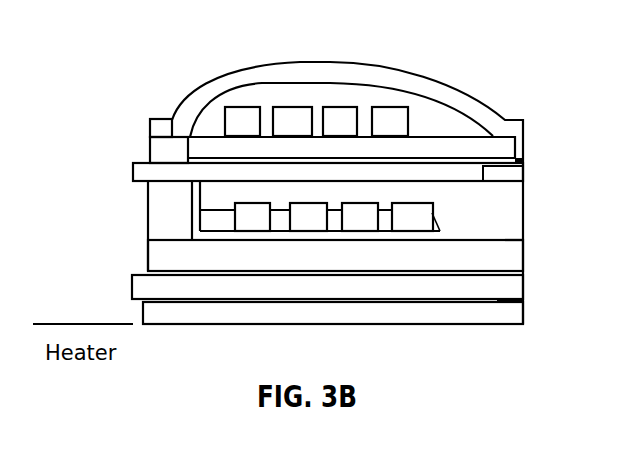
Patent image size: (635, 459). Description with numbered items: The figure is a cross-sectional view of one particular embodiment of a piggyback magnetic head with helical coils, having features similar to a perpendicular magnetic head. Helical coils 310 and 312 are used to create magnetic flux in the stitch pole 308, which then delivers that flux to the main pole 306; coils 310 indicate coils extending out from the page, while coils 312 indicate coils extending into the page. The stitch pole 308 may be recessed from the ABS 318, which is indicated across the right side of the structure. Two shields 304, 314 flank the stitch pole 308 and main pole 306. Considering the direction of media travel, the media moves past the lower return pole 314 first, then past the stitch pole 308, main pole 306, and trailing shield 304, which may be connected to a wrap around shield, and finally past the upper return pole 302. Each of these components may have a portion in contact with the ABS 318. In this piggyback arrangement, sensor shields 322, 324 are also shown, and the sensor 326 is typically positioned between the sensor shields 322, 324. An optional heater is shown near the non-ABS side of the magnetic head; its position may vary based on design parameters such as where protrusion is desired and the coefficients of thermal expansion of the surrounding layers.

The upper return pole 302 is at (468, 93).
The trailing shield 304 is at (523, 150).
The main pole 306 is at (523, 165).
The stitch pole 308 is at (477, 181).
The helical coils 310 is at (225, 122).
The helical coils 312 is at (235, 201).
The lower return pole 314 is at (370, 265).
The ABS 318 is at (530, 245).
The sensor shield 322 is at (133, 292).
The sensor shield 324 is at (143, 312).
The sensor 326 is at (520, 297).